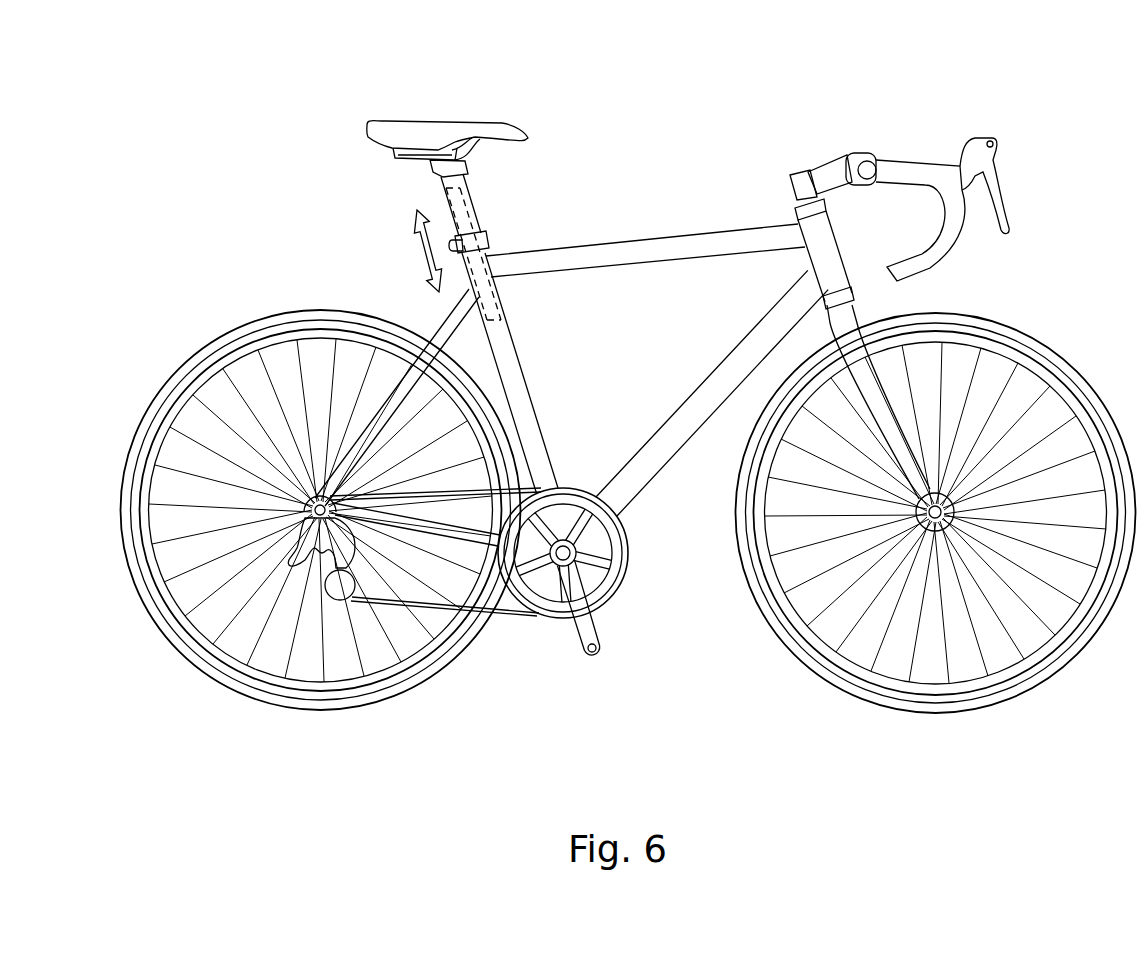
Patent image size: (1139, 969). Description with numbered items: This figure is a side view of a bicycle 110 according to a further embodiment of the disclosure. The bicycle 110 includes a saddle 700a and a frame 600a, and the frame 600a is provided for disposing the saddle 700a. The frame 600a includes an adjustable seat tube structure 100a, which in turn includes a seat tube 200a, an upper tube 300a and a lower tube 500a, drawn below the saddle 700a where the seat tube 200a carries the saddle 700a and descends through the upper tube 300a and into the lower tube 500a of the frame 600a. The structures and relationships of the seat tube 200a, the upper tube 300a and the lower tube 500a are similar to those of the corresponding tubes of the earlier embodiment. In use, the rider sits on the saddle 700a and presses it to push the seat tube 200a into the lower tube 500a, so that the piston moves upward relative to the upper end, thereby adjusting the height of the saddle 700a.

The bicycle 110 is at (230, 63).
The adjustable seat tube structure 100a is at (632, 150).
The seat tube 200a is at (465, 173).
The upper tube 300a is at (465, 207).
The lower tube 500a is at (485, 253).
The frame 600a is at (619, 295).
The saddle 700a is at (414, 128).